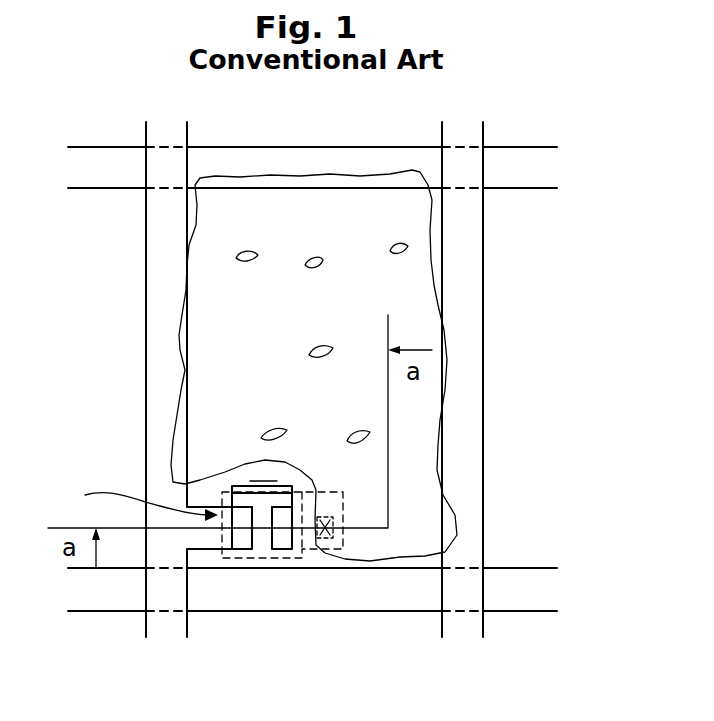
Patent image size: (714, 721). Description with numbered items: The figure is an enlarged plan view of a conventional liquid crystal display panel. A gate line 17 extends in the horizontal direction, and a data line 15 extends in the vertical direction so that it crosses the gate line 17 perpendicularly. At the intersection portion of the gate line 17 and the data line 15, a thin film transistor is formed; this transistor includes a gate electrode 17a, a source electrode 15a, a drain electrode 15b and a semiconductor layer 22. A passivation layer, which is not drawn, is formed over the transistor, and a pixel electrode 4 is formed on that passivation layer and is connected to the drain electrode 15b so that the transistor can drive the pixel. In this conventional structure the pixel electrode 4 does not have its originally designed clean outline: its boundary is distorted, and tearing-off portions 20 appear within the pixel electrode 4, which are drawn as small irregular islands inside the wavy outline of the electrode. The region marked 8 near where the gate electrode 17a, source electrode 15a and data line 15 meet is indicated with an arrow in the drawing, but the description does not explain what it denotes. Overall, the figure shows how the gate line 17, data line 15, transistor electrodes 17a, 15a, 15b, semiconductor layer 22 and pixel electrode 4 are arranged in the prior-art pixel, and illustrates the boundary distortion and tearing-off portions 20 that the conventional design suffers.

The pixel electrode 4 is at (392, 247).
The overlap region between gate electrode and data line 8 is at (140, 500).
The data line 15 is at (157, 287).
The source electrode 15a is at (243, 535).
The drain electrode 15b is at (280, 538).
The gate line 17 is at (518, 598).
The gate electrode 17a is at (259, 490).
The tearing-off portion 20 is at (375, 420).
The semiconductor layer 22 is at (278, 552).